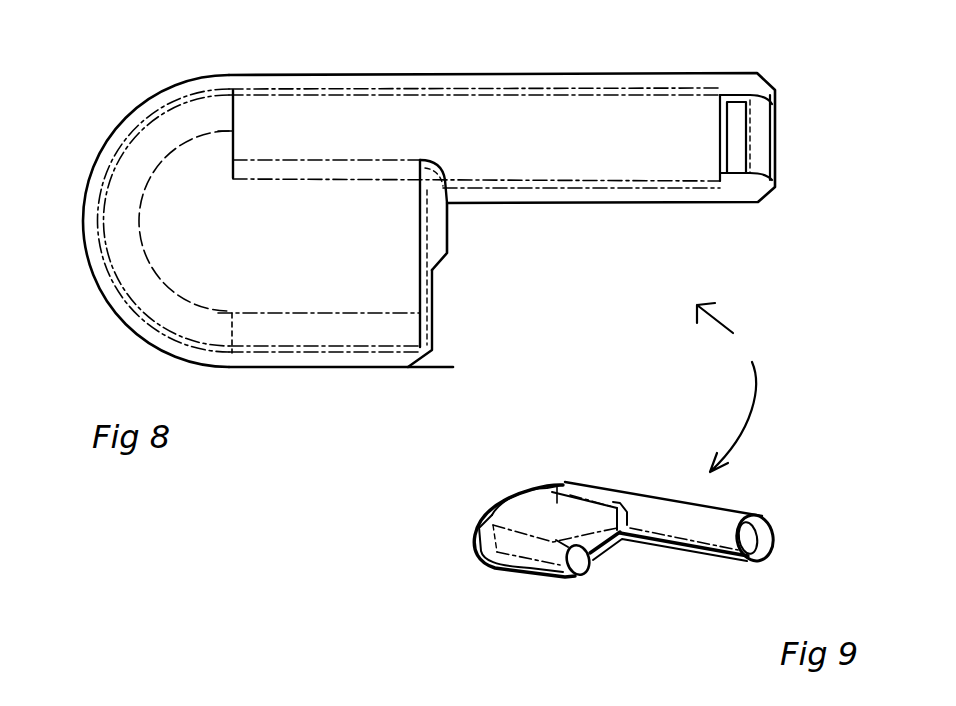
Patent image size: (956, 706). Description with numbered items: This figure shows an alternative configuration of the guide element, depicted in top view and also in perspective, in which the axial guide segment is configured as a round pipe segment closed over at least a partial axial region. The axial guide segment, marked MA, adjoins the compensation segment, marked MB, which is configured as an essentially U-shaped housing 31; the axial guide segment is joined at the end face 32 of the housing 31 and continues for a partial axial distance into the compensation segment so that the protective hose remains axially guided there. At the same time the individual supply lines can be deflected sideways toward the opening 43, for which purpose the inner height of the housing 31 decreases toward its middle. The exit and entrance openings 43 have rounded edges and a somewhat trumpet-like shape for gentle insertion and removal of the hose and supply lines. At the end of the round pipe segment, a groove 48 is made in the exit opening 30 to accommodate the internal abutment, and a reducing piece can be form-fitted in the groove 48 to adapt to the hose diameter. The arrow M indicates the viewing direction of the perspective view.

In FIG. 8, the straight arm portion of the hook element MA is at (608, 117).
In FIG. 9, the straight arm portion of the hook element MA is at (705, 513).
In FIG. 8, the U-shaped bend portion of the hook element MB is at (310, 297).
In FIG. 9, the U-shaped bend portion of the hook element MB is at (530, 522).
In FIG. 9, the hook element M is at (731, 387).
In FIG. 8, the exit opening 30 is at (760, 133).
In FIG. 8, the housing 31 is at (238, 282).
In FIG. 9, the housing 31 is at (543, 500).
In FIG. 8, the end face 32 is at (432, 277).
In FIG. 9, the end face 32 is at (607, 557).
In FIG. 9, the exit and entrance opening 43 is at (577, 563).
In FIG. 8, the groove 48 is at (737, 100).